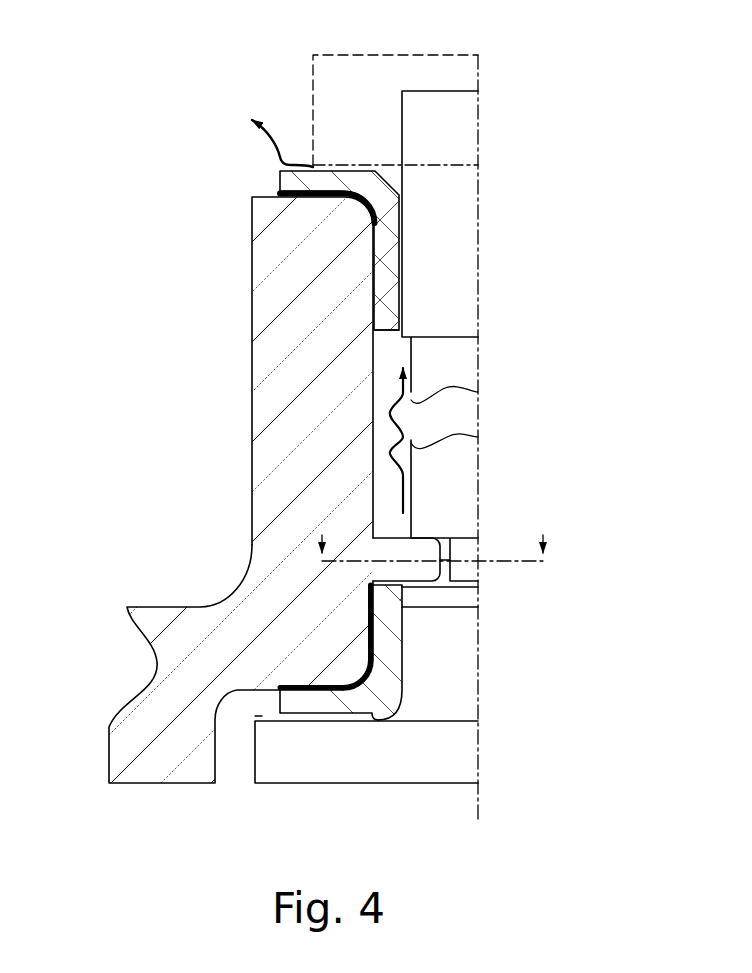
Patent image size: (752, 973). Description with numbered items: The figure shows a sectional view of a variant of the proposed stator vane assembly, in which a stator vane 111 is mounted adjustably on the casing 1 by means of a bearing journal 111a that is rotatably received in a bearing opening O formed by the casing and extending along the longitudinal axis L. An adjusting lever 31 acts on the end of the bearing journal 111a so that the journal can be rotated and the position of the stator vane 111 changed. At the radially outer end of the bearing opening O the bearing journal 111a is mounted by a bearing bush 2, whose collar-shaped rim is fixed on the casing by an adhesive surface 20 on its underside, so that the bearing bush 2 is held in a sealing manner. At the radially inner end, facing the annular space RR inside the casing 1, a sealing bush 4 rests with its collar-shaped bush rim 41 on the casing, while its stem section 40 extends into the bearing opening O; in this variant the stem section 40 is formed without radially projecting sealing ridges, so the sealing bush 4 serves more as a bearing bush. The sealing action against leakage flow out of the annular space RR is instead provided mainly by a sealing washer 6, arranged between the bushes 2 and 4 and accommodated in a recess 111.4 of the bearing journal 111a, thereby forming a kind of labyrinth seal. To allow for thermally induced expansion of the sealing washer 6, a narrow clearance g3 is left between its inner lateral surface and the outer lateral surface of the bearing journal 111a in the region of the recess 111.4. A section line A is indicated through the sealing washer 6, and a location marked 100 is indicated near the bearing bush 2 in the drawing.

The casing 1 is at (230, 205).
The bearing bush 2 is at (324, 167).
The sealing bush 4 is at (370, 597).
The sealing washer 6 is at (376, 528).
The adhesive surface 20 is at (313, 198).
The adjusting lever 31 is at (402, 63).
The stem section 40 is at (390, 660).
The bush rim 41 is at (330, 703).
The contact point 100 is at (390, 338).
The stator vane 111 is at (470, 795).
The bearing journal 111a is at (466, 233).
The recess 111.4 is at (470, 550).
The clearance g3 is at (448, 569).
The bearing opening O is at (406, 353).
The longitudinal axis L is at (478, 72).
The section line A- A is at (435, 545).
The annular space RR is at (260, 713).